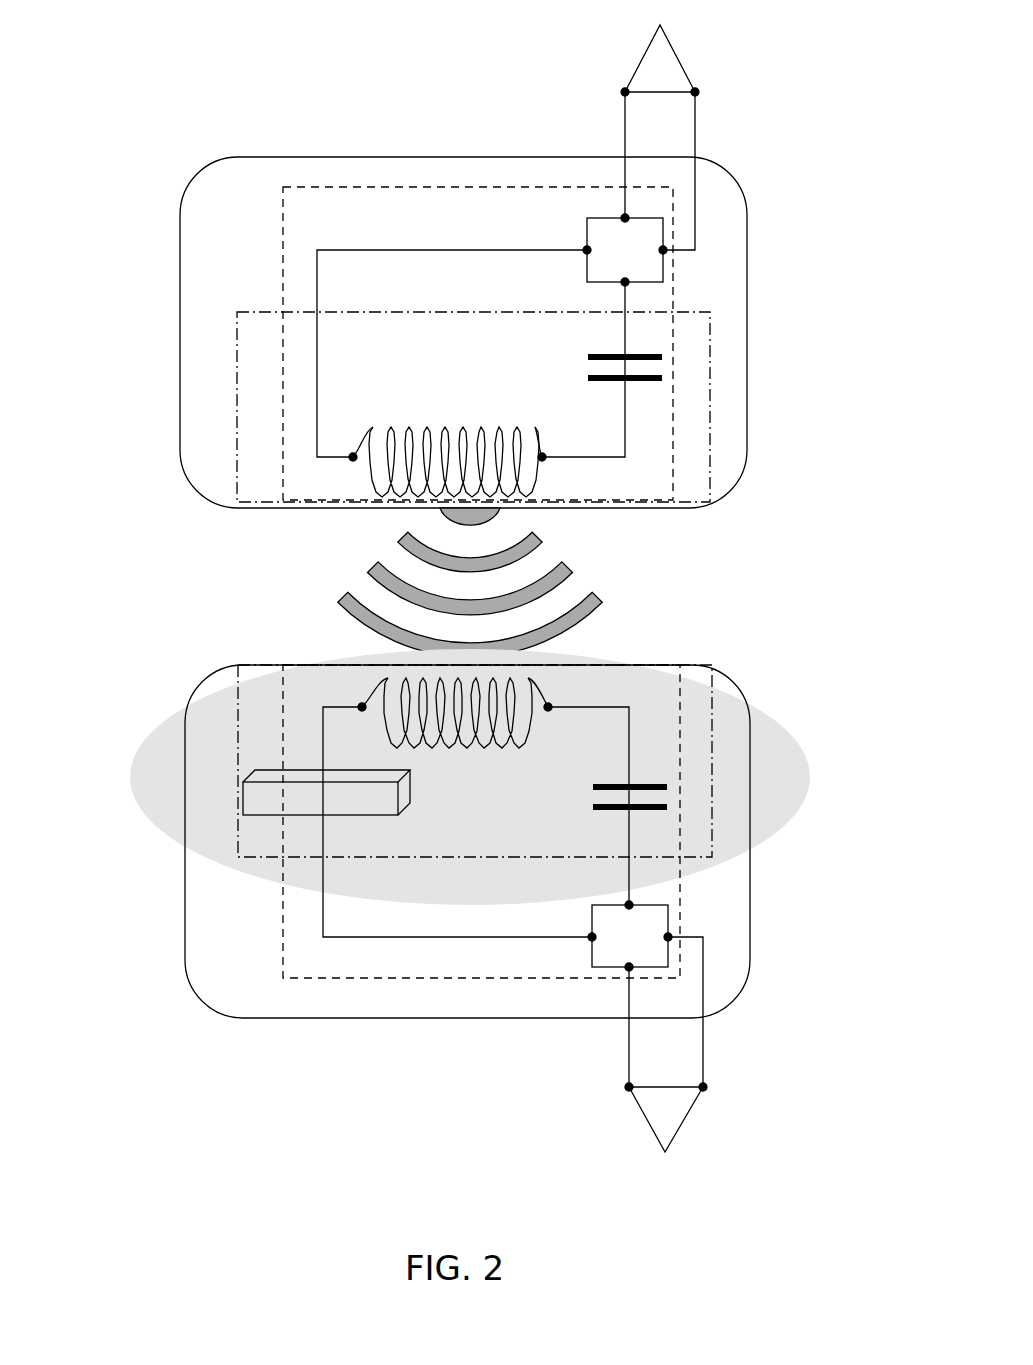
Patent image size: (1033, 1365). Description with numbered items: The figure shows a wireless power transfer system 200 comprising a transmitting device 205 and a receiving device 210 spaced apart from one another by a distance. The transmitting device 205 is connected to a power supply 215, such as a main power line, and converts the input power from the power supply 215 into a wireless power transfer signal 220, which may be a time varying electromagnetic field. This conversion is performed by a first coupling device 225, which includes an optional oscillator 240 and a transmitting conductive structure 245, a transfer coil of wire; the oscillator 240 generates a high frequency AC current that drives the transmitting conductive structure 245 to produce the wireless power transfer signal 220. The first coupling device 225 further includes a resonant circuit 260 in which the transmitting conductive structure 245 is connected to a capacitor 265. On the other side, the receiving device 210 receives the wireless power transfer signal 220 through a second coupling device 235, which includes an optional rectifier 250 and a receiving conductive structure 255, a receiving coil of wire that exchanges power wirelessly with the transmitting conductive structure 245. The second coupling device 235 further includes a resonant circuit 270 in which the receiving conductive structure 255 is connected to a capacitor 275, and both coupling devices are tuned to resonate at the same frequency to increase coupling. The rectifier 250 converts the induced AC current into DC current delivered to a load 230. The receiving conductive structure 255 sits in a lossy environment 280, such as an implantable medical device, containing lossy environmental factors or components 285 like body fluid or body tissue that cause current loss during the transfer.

The wireless power transfer system 200 is at (114, 86).
The transmitting device 205 is at (317, 157).
The receiving device 210 is at (247, 1020).
The power supply 215 is at (680, 89).
The wireless power transfer signal 220 is at (575, 562).
The first coupling device 225 is at (673, 442).
The load 230 is at (686, 1115).
The second coupling device 235 is at (680, 832).
The oscillator 240 is at (645, 261).
The transmitting conductive structure 245 is at (442, 427).
The rectifier 250 is at (649, 948).
The receiving conductive structure 255 is at (437, 748).
The resonant circuit 260 is at (710, 340).
The capacitor 265 is at (590, 367).
The resonant circuit 270 is at (712, 755).
The capacitor 275 is at (593, 795).
The lossy environment 280 is at (147, 812).
The lossy environmental factors or components 285 is at (265, 800).